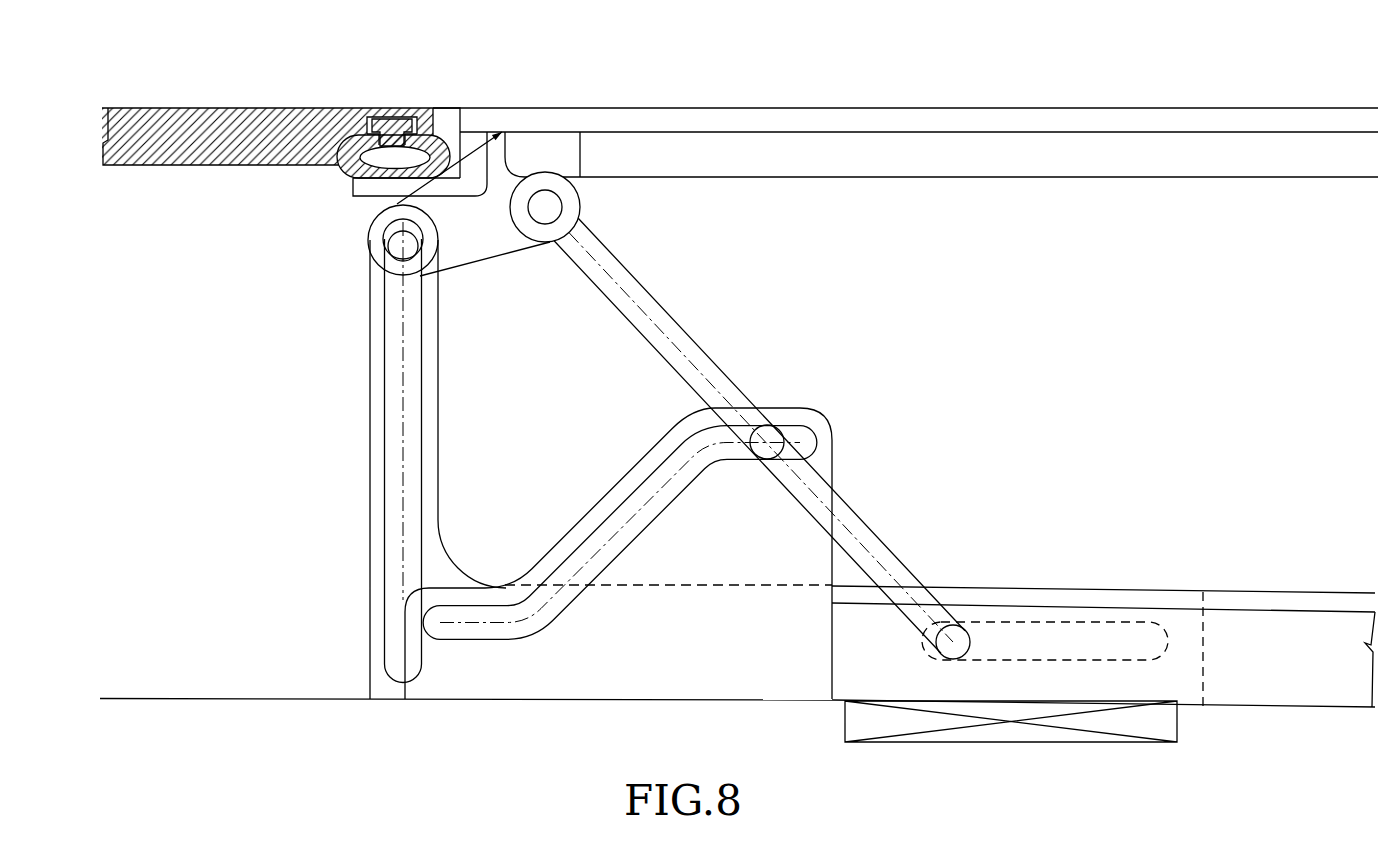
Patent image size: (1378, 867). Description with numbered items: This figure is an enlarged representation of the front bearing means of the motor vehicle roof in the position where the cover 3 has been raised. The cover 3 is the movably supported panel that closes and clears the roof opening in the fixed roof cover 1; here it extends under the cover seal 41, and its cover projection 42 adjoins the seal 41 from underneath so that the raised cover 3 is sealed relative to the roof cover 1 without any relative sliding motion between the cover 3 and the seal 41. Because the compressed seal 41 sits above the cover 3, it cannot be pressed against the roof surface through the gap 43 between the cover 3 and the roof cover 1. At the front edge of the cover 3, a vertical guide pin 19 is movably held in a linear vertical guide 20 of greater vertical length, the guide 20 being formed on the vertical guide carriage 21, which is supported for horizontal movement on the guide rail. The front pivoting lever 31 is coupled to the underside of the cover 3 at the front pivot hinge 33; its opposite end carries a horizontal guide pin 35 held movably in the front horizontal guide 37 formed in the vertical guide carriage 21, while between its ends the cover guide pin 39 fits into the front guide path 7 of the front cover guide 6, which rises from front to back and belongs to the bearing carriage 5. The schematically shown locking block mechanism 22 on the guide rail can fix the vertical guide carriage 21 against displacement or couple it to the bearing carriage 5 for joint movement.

The fixed roof cover 1 is at (231, 104).
The cover 3 is at (896, 104).
The bearing carriage 5 is at (1266, 705).
The front cover guide 6 is at (702, 570).
The front guide path 7 is at (608, 510).
The vertical guide pin 19 is at (392, 243).
The linear vertical guide 20 is at (395, 538).
The vertical guide carriage 21 is at (367, 673).
The locking block mechanism 22 is at (885, 722).
The front pivoting lever 31 is at (657, 301).
The front pivot hinge 33 is at (545, 207).
The horizontal guide pin 35 is at (955, 645).
The front horizontal guide 37 is at (1108, 650).
The cover guide pin 39 is at (768, 428).
The cover seal 41 is at (350, 173).
The cover projection 42 is at (372, 188).
The gap 43 is at (444, 122).